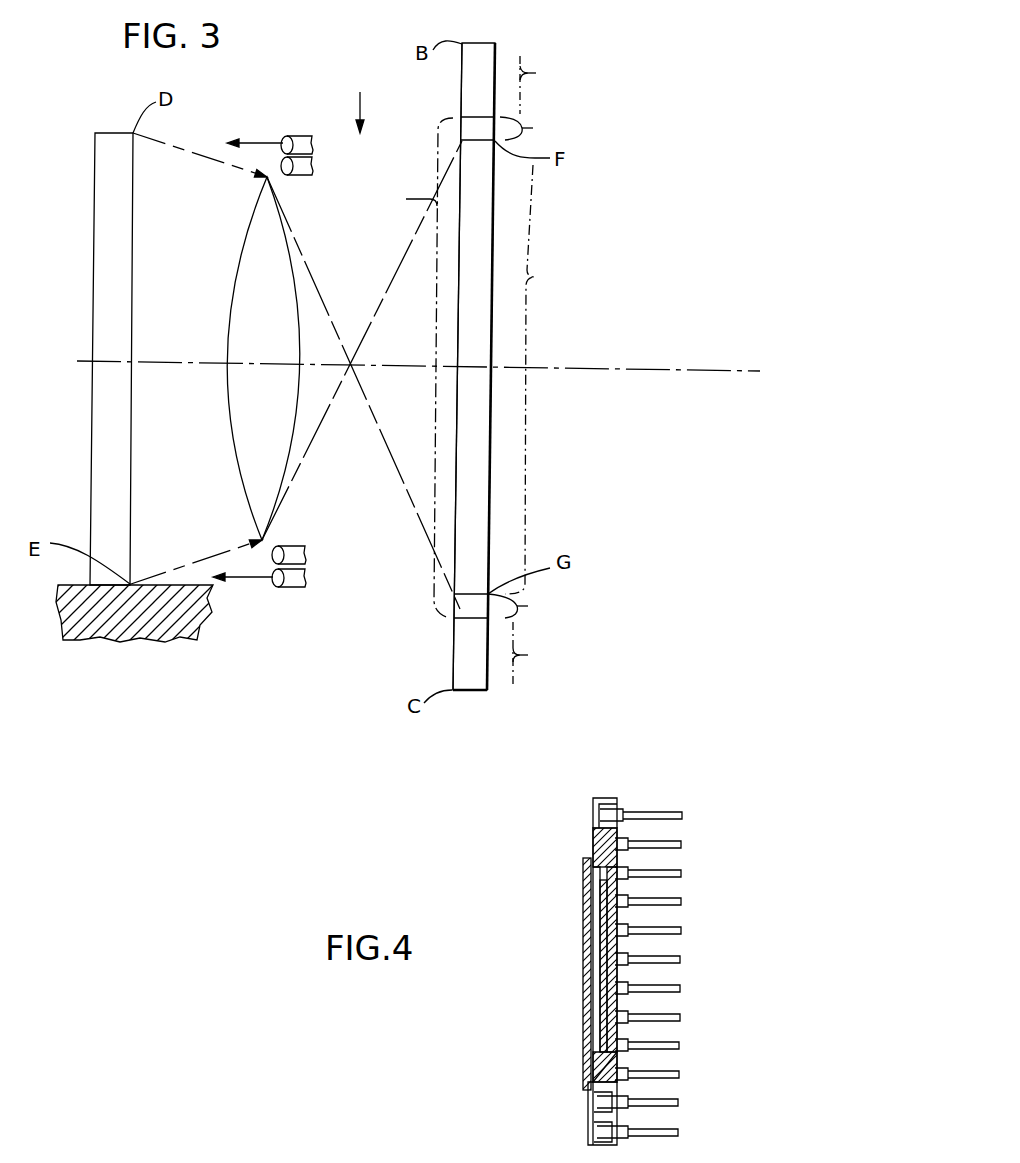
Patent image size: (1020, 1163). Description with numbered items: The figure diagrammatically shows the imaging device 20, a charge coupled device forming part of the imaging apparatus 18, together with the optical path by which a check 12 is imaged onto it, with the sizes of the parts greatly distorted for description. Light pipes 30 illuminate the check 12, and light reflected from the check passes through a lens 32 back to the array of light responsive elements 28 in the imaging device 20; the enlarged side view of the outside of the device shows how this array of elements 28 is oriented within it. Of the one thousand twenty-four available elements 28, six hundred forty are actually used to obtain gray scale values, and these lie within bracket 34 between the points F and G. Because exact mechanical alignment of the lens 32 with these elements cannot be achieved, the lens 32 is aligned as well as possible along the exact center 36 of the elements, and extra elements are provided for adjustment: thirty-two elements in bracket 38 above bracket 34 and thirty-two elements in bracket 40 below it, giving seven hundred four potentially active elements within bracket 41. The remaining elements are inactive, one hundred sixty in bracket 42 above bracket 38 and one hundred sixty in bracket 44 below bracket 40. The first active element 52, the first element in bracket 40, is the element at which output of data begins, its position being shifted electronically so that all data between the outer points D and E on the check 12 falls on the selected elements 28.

In FIG. 3, the check 12 is at (136, 508).
In FIG. 3, the imaging apparatus 18 is at (358, 99).
In FIG. 3, the imaging device (charge coupled device, CCD) 20 is at (438, 633).
In FIG. 4, the imaging device (charge coupled device, CCD) 20 is at (580, 832).
In FIG. 3, the light responsive elements 28 is at (443, 653).
In FIG. 4, the light responsive elements 28 is at (601, 1005).
In FIG. 3, the light pipes 30 is at (297, 135).
In FIG. 3, the lens 32 is at (235, 288).
In FIG. 3, the bracket (640 elements actually used) 34 is at (532, 262).
In FIG. 3, the exact center 36 is at (720, 371).
In FIG. 3, the bracket (32 elements above) 38 is at (522, 122).
In FIG. 3, the bracket (32 elements below) 40 is at (513, 618).
In FIG. 3, the bracket (704 potentially active elements) 41 is at (438, 151).
In FIG. 3, the bracket (160 inactive elements above) 42 is at (507, 42).
In FIG. 3, the bracket (160 inactive elements below) 44 is at (514, 678).
In FIG. 3, the first active element 52 is at (457, 612).